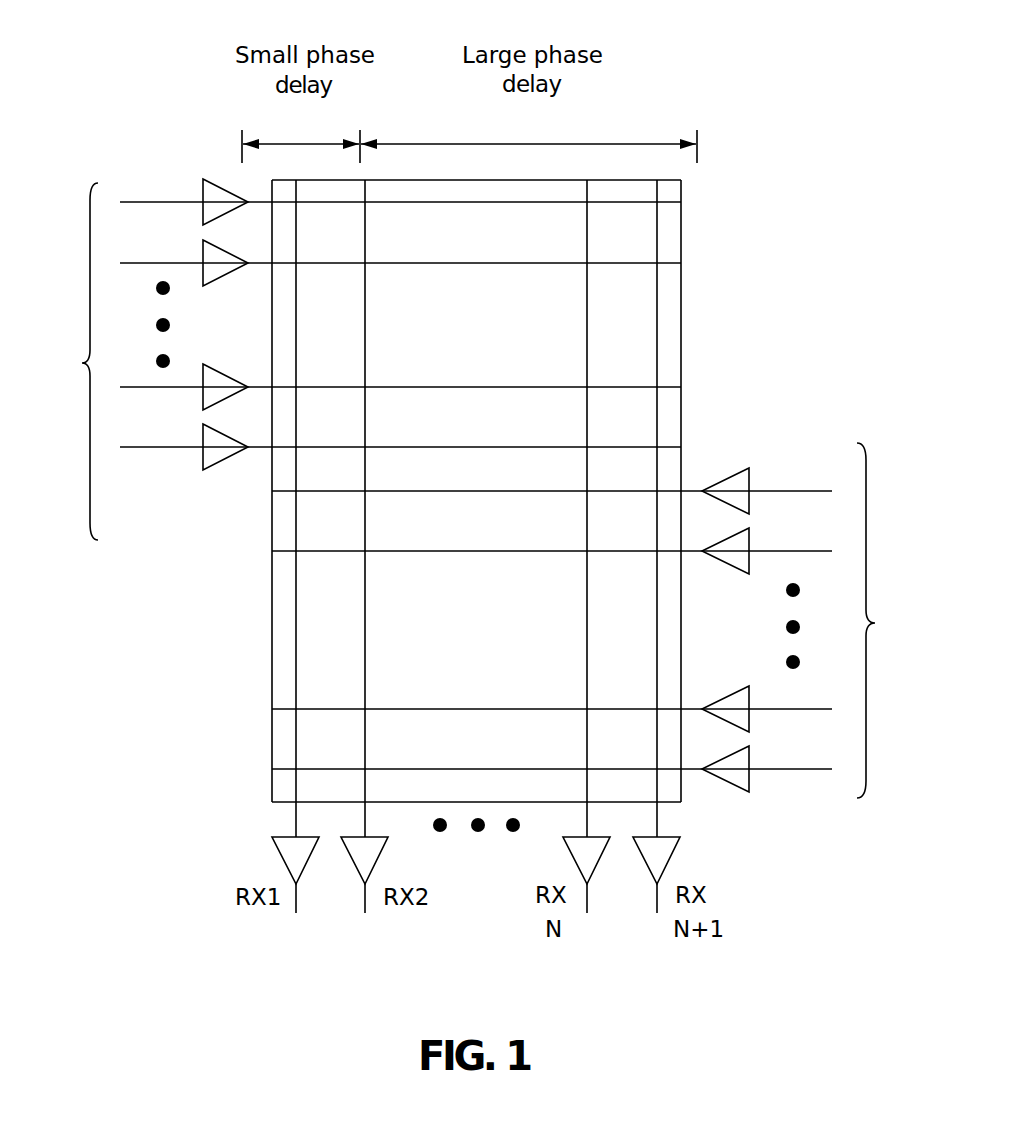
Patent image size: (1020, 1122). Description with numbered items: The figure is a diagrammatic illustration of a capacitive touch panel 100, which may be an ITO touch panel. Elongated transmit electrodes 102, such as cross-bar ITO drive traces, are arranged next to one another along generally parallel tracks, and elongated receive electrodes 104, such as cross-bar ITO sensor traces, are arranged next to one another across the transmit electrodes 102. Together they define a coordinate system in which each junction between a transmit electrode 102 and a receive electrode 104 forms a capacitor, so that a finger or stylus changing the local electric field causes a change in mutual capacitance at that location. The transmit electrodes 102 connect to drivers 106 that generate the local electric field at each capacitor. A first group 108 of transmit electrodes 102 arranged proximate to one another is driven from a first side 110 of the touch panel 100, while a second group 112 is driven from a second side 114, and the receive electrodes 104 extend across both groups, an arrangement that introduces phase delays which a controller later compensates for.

The capacitive touch panel 100 is at (732, 49).
The transmit electrodes 102 is at (623, 263).
The receive electrodes 104 is at (293, 628).
The drivers 106 is at (228, 187).
The first group of elongated transmit electrodes 108 is at (106, 357).
The first side of the touch panel 110 is at (260, 678).
The second group of elongated transmit electrodes 112 is at (847, 621).
The second side of the touch panel 114 is at (693, 277).